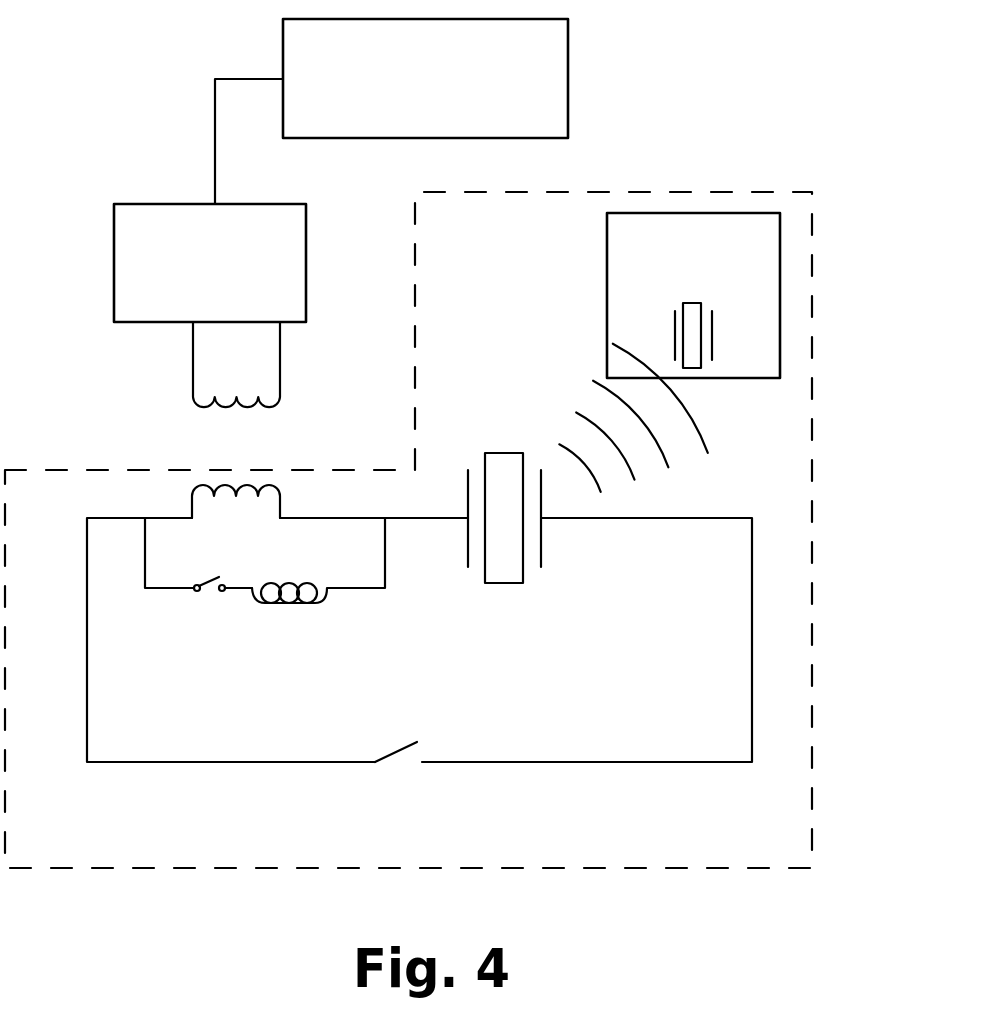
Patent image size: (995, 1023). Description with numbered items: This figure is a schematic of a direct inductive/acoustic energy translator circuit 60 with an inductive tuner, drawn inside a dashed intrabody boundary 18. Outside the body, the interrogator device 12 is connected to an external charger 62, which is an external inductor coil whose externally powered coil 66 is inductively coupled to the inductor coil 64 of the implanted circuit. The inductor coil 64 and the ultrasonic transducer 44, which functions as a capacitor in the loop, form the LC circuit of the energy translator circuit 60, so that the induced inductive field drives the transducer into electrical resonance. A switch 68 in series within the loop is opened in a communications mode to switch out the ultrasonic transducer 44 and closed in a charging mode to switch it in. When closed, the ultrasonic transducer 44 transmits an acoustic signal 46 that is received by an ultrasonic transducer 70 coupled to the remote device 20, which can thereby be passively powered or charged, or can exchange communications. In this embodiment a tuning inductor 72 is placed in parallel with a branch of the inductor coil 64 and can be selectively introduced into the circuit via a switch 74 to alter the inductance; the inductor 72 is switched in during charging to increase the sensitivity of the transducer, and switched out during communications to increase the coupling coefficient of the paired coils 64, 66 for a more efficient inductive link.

The interrogator device 12 is at (570, 78).
The patient body boundary 18 is at (708, 190).
The remote device 20 is at (780, 258).
The ultrasonic transducer 70 is at (701, 303).
The ultrasonic transducer 44 is at (500, 453).
The acoustic signal 46 is at (634, 461).
The energy translator circuit 60 is at (772, 662).
The external charger 62 is at (114, 252).
The inductor coil 64 is at (276, 516).
The externally powered coil 66 is at (193, 352).
The switch 68 is at (392, 752).
The tuning inductor 72 is at (297, 600).
The switch 74 is at (208, 592).